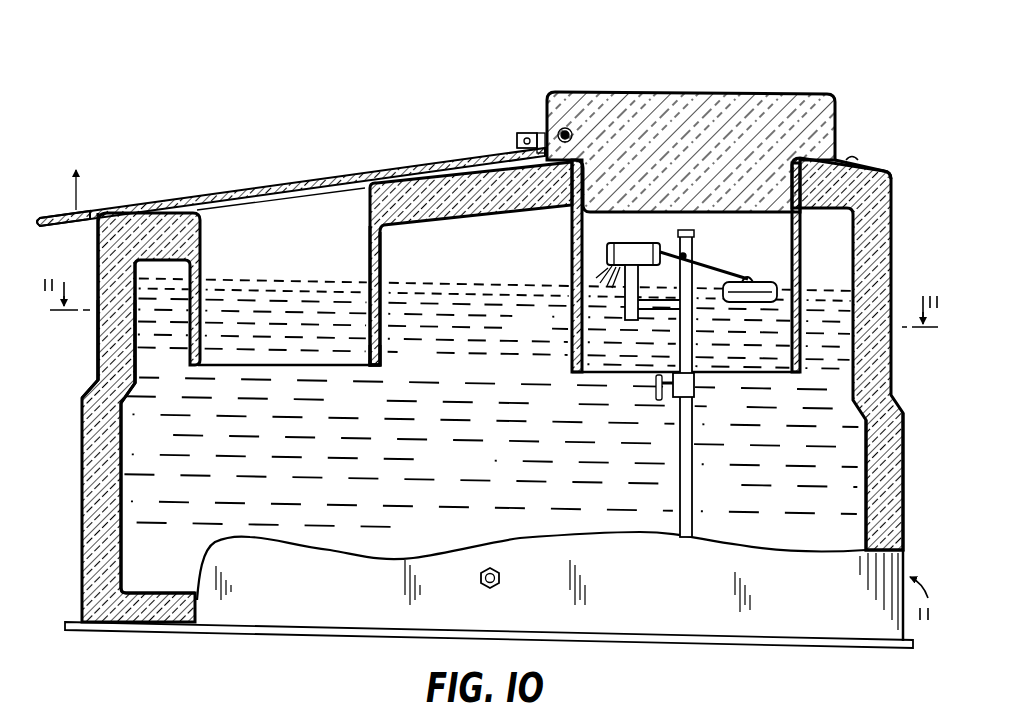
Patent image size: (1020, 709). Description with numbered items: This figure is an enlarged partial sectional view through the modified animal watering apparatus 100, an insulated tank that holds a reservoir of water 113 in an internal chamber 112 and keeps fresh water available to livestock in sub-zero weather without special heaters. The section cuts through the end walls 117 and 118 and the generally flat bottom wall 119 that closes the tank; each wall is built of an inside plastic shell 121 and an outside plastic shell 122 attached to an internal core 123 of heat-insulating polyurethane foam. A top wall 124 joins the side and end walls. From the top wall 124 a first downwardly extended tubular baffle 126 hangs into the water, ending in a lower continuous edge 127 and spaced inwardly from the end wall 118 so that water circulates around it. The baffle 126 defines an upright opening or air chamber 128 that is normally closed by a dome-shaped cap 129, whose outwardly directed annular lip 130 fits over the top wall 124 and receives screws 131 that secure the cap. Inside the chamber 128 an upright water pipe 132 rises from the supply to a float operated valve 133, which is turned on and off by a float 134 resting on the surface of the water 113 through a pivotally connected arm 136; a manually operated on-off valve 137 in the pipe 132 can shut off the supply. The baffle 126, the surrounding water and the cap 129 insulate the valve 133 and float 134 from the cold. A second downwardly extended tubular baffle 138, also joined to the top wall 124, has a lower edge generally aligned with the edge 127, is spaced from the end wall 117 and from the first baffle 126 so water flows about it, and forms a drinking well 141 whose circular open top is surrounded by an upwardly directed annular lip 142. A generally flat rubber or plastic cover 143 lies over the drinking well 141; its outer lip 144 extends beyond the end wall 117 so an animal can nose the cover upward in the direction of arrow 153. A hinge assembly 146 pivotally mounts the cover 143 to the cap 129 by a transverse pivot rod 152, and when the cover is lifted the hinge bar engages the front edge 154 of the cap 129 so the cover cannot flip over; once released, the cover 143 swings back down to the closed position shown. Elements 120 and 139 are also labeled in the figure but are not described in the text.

The animal watering apparatus 100 is at (873, 91).
The internal chamber 112 is at (492, 406).
The water 113 is at (840, 470).
The end wall 117 is at (83, 494).
The end wall 118 is at (889, 368).
The bottom wall 119 is at (203, 631).
The bolt 120 is at (500, 581).
The inside plastic shell 121 is at (122, 433).
The outside plastic shell 122 is at (83, 419).
The internal core 123 is at (107, 390).
The top wall 124 is at (443, 140).
The first downwardly extended tubular baffle 126 is at (548, 318).
The lower continuous edge 127 is at (572, 400).
The upright opening or chamber 128 is at (766, 267).
The cap 129 is at (713, 70).
The annular lip 130 is at (868, 162).
The screws 131 is at (853, 157).
The water pipe 132 is at (692, 455).
The float operated valve 133 is at (626, 224).
The float 134 is at (768, 287).
The arm 136 is at (723, 259).
The manually operated on-off valve 137 is at (694, 381).
The second downwardly extended tubular baffle 138 is at (380, 344).
The partition bottom 139 is at (377, 368).
The drinking well 141 is at (285, 295).
The annular lip 142 is at (338, 153).
The cover 143 is at (247, 192).
The outer edge or lip 144 is at (40, 221).
The hinge assembly 146 is at (500, 97).
The transverse pivot rod 152 is at (568, 129).
The arrow 153 is at (77, 200).
The front edge 154 is at (535, 75).